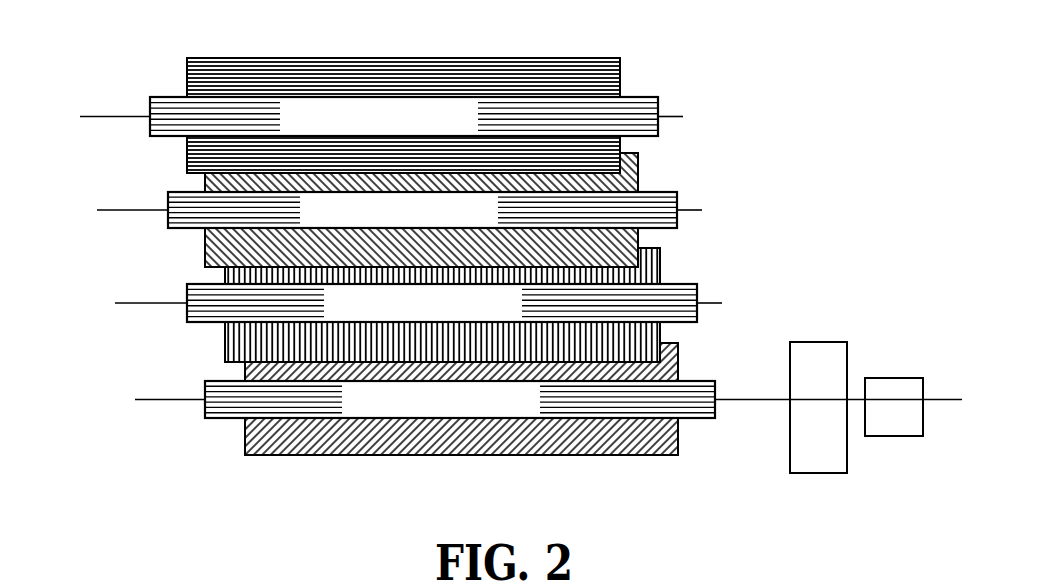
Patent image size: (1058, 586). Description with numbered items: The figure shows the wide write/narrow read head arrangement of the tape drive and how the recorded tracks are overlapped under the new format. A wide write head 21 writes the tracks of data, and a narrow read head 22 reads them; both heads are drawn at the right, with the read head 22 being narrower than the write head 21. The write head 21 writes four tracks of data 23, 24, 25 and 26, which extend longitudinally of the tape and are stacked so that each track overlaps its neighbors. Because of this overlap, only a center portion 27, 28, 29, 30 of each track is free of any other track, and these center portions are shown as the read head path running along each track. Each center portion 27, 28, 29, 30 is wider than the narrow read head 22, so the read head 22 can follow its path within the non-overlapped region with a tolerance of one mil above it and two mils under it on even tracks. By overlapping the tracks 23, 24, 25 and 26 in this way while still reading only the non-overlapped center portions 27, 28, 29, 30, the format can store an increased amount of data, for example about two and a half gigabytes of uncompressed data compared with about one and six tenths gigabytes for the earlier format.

The wide write head 21 is at (815, 340).
The narrow read head 22 is at (882, 377).
The track of data 23 is at (678, 362).
The track of data 24 is at (660, 268).
The track of data 25 is at (640, 177).
The track of data 26 is at (622, 80).
The center portion of track 27 is at (206, 410).
The center portion of track 28 is at (188, 313).
The center portion of track 29 is at (169, 217).
The center portion of track 30 is at (148, 125).